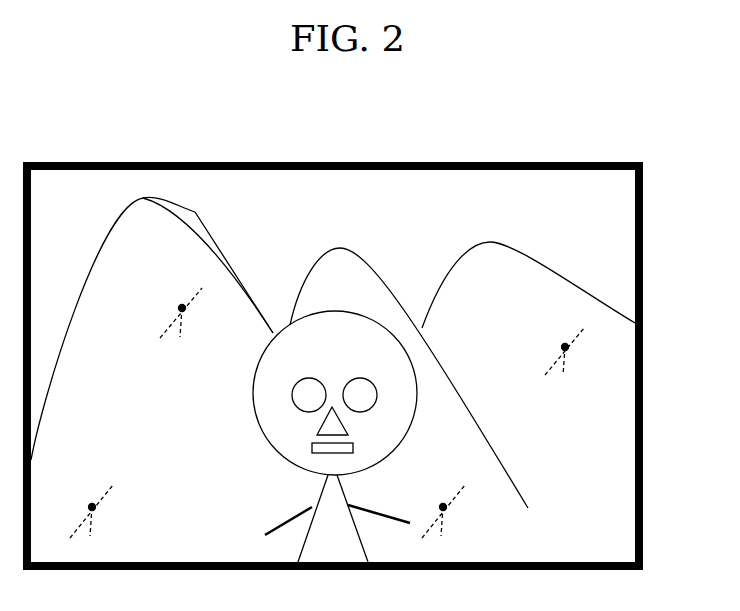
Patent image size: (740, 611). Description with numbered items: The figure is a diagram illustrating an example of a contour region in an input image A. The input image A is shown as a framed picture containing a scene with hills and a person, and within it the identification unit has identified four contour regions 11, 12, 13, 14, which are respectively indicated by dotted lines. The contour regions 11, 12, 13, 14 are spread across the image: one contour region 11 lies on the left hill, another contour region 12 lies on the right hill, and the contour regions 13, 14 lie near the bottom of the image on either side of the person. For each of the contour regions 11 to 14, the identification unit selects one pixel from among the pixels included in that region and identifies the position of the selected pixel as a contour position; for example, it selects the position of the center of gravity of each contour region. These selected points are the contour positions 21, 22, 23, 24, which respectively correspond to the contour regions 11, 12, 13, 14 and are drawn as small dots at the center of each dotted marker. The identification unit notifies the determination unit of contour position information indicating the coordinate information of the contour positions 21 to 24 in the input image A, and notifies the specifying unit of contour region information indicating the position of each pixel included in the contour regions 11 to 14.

The input image A is at (643, 371).
The contour region 11 is at (182, 304).
The contour region 12 is at (565, 343).
The contour region 13 is at (443, 503).
The contour region 14 is at (92, 503).
The contour position 21 is at (184, 310).
The contour position 22 is at (567, 349).
The contour position 23 is at (445, 509).
The contour position 24 is at (94, 509).